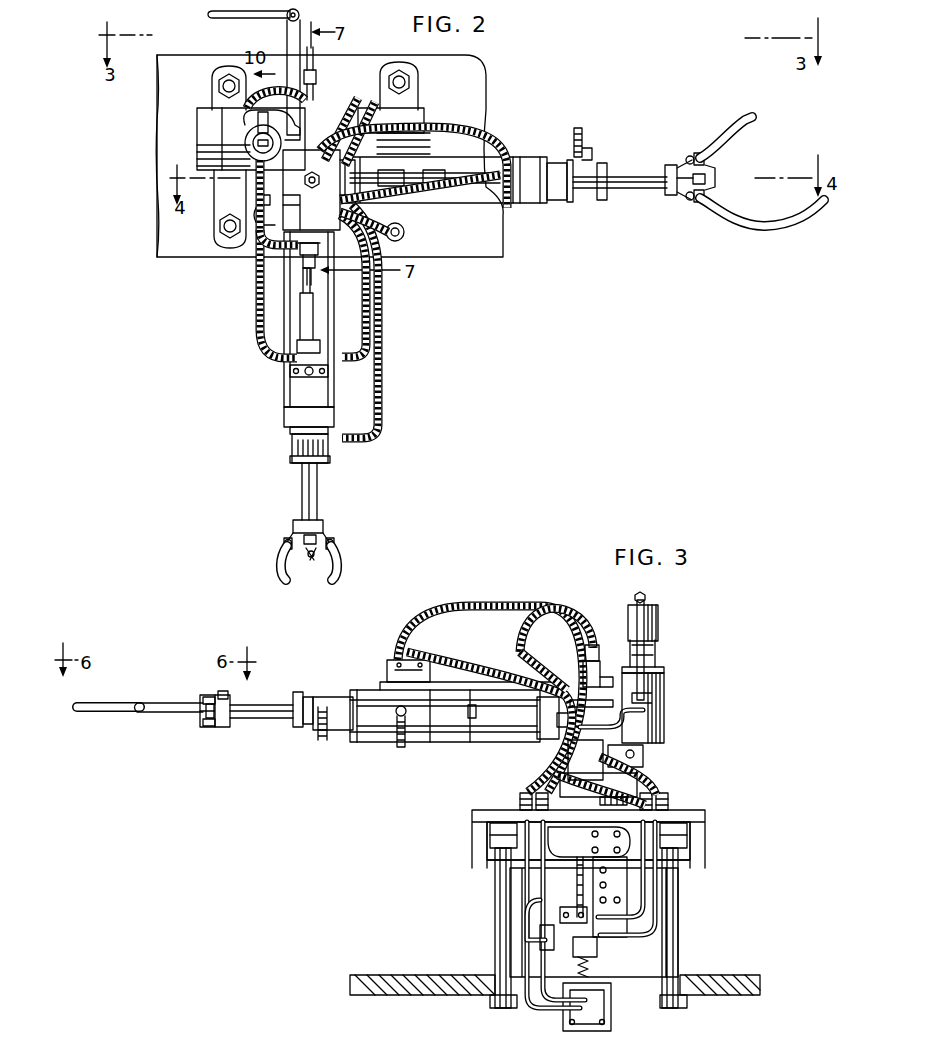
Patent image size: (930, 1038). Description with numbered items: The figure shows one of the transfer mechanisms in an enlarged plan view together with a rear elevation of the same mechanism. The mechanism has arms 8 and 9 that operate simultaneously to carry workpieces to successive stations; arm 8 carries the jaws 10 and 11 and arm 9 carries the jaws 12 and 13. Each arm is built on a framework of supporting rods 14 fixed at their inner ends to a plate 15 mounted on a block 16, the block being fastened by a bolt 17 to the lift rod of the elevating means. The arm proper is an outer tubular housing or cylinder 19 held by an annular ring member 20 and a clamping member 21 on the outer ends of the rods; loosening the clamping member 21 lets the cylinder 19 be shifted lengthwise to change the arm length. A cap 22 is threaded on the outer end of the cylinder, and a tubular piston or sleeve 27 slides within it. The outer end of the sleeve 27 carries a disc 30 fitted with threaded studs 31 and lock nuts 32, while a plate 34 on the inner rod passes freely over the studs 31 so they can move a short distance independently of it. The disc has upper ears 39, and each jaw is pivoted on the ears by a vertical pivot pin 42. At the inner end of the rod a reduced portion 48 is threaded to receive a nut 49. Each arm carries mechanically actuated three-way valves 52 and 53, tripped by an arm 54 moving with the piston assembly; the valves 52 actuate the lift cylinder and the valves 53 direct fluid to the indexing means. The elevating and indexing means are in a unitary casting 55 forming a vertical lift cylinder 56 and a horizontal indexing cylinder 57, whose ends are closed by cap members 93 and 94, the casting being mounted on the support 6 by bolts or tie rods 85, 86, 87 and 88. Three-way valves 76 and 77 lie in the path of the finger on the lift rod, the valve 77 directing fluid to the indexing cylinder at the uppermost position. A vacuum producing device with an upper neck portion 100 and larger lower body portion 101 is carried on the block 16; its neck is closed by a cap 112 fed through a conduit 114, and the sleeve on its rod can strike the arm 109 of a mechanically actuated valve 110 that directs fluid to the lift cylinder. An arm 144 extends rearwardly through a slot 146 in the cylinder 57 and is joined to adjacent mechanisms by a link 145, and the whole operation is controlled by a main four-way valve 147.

In FIG. 3, the support 6 is at (406, 995).
In FIG. 2, the arm 8 is at (524, 155).
In FIG. 2, the arm 9 is at (280, 324).
In FIG. 2, the jaw 10 is at (730, 125).
In FIG. 3, the jaw 10 is at (153, 713).
In FIG. 2, the jaw 11 is at (753, 230).
In FIG. 3, the jaw 11 is at (108, 703).
In FIG. 2, the jaw 12 is at (280, 572).
In FIG. 2, the jaw 13 is at (336, 570).
In FIG. 2, the supporting rods 14 is at (478, 157).
In FIG. 3, the supporting rods 14 is at (375, 689).
In FIG. 2, the plate 15 is at (340, 170).
In FIG. 3, the plate 15 is at (537, 734).
In FIG. 2, the block 16 is at (262, 200).
In FIG. 3, the block 16 is at (645, 723).
In FIG. 2, the bolt 17 is at (318, 190).
In FIG. 3, the bolt 17 is at (595, 645).
In FIG. 2, the outer tubular housing 19 is at (450, 160).
In FIG. 3, the outer tubular housing 19 is at (370, 732).
In FIG. 2, the annular ring member 20 is at (565, 203).
In FIG. 3, the annular ring member 20 is at (345, 700).
In FIG. 2, the clamping member 21 is at (565, 178).
In FIG. 2, the cap 22 is at (603, 195).
In FIG. 3, the cap 22 is at (298, 730).
In FIG. 2, the piston sleeve 27 is at (645, 190).
In FIG. 3, the piston sleeve 27 is at (258, 720).
In FIG. 2, the disc 30 is at (669, 165).
In FIG. 3, the disc 30 is at (228, 730).
In FIG. 2, the threaded studs 31 is at (716, 168).
In FIG. 3, the threaded studs 31 is at (209, 727).
In FIG. 2, the lock nuts 32 is at (706, 180).
In FIG. 3, the lock nuts 32 is at (203, 698).
In FIG. 3, the plate 34 is at (222, 692).
In FIG. 2, the upper ear 39 is at (689, 156).
In FIG. 2, the pivot pin 42 is at (696, 153).
In FIG. 3, the reduced-diameter inner end portion of rod 48 is at (477, 710).
In FIG. 3, the nut 49 is at (473, 720).
In FIG. 3, the three-way valve 52 is at (392, 660).
In FIG. 3, the second three-way valve 53 is at (516, 660).
In FIG. 3, the arm 54 is at (445, 660).
In FIG. 2, the casting member 55 is at (338, 104).
In FIG. 3, the lift cylinder 56 is at (607, 960).
In FIG. 2, the indexing cylinder 57 is at (400, 115).
In FIG. 3, the indexing cylinder 57 is at (672, 810).
In FIG. 3, the three-way valve 76 is at (612, 1020).
In FIG. 3, the three-way valve 77 is at (600, 945).
In FIG. 2, the bolt or tie rod 85 is at (225, 232).
In FIG. 2, the bolt or tie rod 86 is at (218, 72).
In FIG. 3, the bolt or tie rod 86 is at (692, 940).
In FIG. 2, the bolt or tie rod 87 is at (404, 232).
In FIG. 2, the bolt or tie rod 88 is at (398, 68).
In FIG. 3, the bolt or tie rod 88 is at (495, 928).
In FIG. 2, the cap member 93 is at (200, 125).
In FIG. 2, the cap member 94 is at (427, 113).
In FIG. 3, the upper neck portion 100 is at (660, 656).
In FIG. 2, the lower body portion 101 is at (245, 143).
In FIG. 3, the lower body portion 101 is at (665, 688).
In FIG. 3, the arm 109 is at (643, 756).
In FIG. 3, the mechanically actuated valve 110 is at (526, 778).
In FIG. 3, the cap 112 is at (659, 635).
In FIG. 3, the conduit 114 is at (645, 617).
In FIG. 2, the arm 144 is at (287, 35).
In FIG. 3, the arm 144 is at (632, 865).
In FIG. 2, the link 145 is at (213, 15).
In FIG. 3, the slot 146 is at (490, 855).
In FIG. 3, the main four-way valve 147 is at (525, 952).